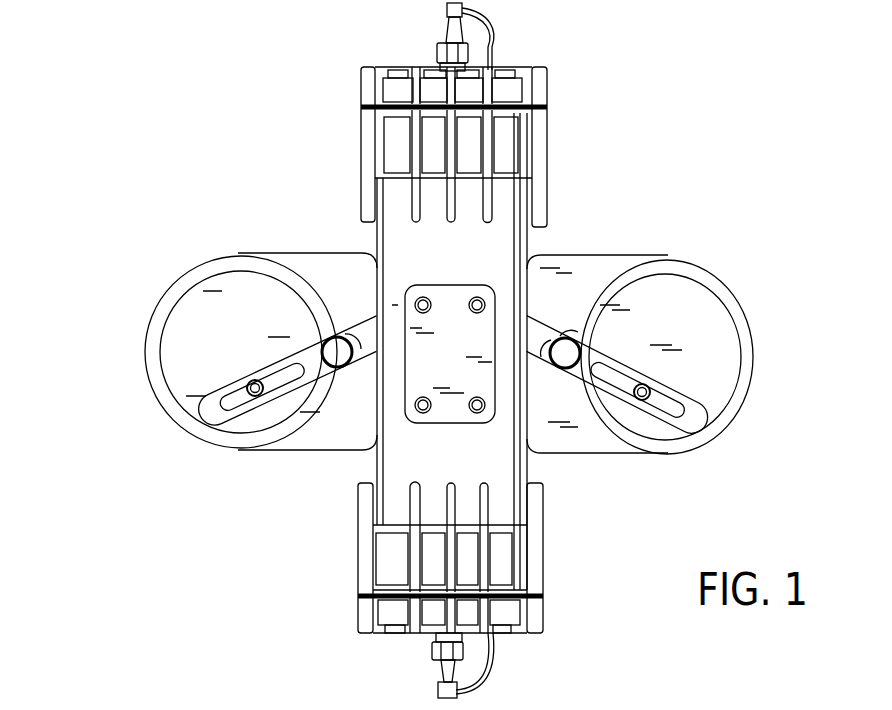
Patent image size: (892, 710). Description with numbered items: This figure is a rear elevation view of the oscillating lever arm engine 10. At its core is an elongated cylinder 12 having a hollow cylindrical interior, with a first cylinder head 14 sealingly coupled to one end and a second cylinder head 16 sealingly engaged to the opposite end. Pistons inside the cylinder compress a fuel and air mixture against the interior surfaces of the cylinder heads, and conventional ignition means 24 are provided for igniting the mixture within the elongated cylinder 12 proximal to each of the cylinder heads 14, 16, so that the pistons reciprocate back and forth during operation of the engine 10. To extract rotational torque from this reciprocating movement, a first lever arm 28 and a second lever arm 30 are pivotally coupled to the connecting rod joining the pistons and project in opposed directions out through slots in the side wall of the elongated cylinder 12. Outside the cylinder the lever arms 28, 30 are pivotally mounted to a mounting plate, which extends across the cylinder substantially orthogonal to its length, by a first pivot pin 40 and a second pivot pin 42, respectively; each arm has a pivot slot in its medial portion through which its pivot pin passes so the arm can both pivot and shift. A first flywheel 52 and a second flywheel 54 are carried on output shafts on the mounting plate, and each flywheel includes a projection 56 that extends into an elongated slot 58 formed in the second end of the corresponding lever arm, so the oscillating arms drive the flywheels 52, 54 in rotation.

The oscillating lever arm engine 10 is at (224, 208).
The elongated cylinder 12 is at (472, 236).
The first cylinder head 14 is at (548, 88).
The second cylinder head 16 is at (546, 622).
The ignition means 24 is at (497, 44).
The first lever arm 28 is at (287, 342).
The second lever arm 30 is at (700, 407).
The first pivot pin 40 is at (337, 368).
The second pivot pin 42 is at (565, 370).
The first flywheel 52 is at (192, 343).
The second flywheel 54 is at (677, 303).
The projection 56 is at (255, 398).
The elongated slot 58 is at (207, 410).